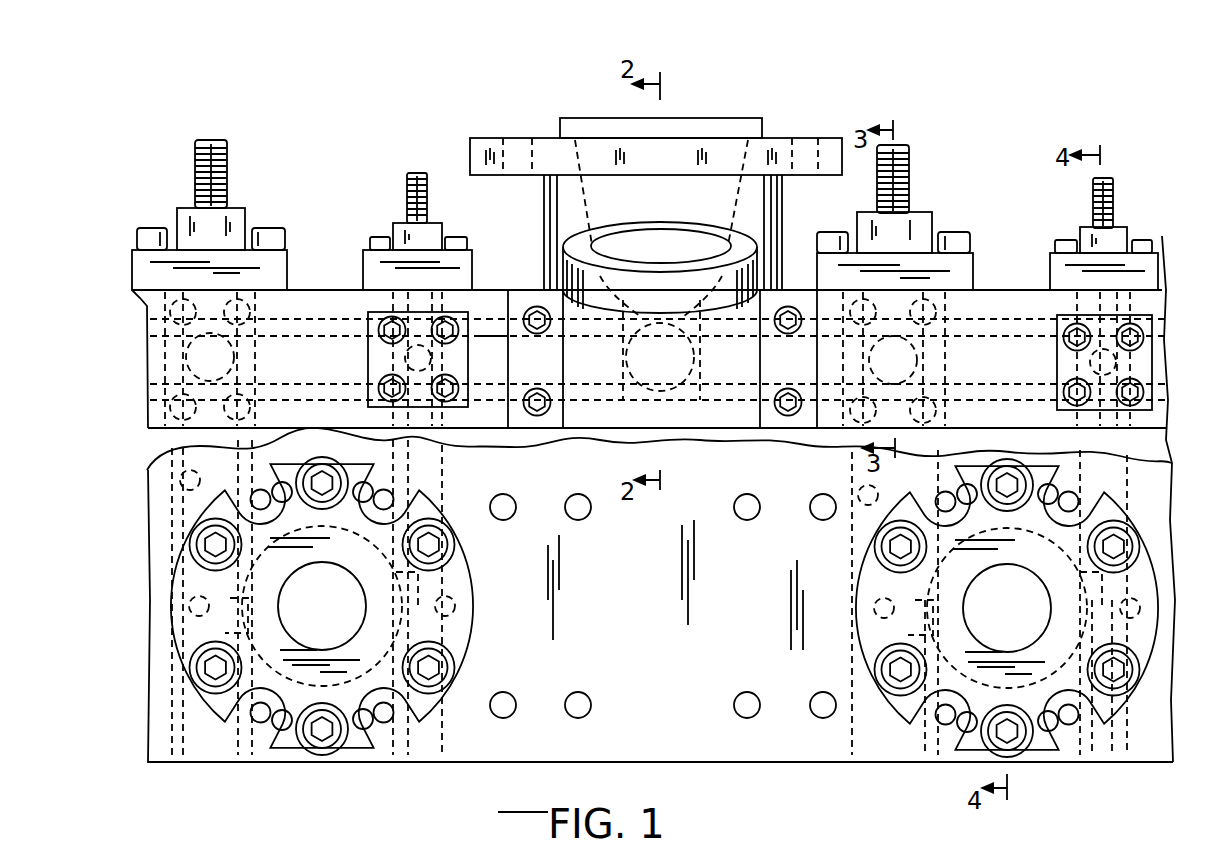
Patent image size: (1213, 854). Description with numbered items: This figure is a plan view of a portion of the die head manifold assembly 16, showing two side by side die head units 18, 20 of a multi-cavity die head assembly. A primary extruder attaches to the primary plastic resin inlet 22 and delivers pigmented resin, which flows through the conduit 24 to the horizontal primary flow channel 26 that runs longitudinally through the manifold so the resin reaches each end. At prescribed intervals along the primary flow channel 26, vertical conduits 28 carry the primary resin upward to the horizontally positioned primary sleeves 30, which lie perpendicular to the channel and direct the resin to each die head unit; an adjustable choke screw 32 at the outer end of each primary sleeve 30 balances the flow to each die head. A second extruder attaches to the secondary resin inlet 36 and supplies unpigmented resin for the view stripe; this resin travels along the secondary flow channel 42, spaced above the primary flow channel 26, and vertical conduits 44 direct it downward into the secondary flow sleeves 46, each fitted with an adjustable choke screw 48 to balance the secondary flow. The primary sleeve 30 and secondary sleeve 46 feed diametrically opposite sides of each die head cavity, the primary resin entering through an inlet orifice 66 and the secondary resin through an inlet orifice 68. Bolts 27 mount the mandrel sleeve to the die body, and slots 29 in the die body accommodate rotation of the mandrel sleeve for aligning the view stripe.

The die head manifold assembly 16 is at (766, 776).
The die head unit 18 is at (430, 712).
The die head unit 20 is at (906, 722).
The primary plastic resin inlet 22 is at (600, 130).
The conduit 24 is at (775, 196).
The primary flow channel 26 is at (477, 300).
The bolts 27 is at (440, 668).
The vertical conduits 28 is at (238, 357).
The slots 29 is at (470, 607).
The primary sleeves 30 is at (175, 540).
The adjustable choke screw 32 is at (230, 170).
The secondary resin inlet 36 is at (722, 262).
The secondary flow channel 42 is at (492, 335).
The vertical conduits 44 is at (380, 352).
The secondary flow sleeves 46 is at (440, 477).
The adjustable choke screw 48 is at (408, 194).
The inlet orifice 66 is at (237, 590).
The inlet orifice 68 is at (405, 587).